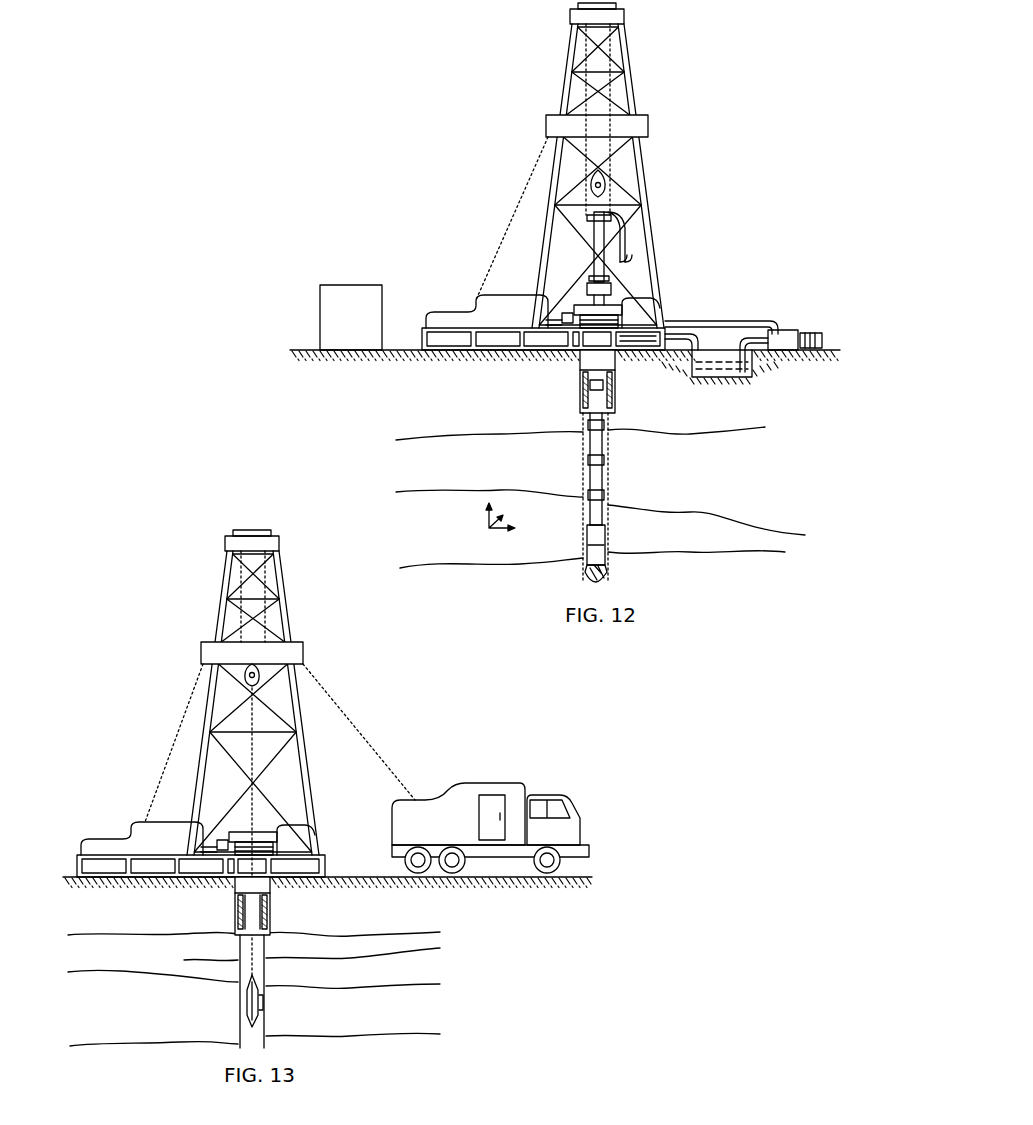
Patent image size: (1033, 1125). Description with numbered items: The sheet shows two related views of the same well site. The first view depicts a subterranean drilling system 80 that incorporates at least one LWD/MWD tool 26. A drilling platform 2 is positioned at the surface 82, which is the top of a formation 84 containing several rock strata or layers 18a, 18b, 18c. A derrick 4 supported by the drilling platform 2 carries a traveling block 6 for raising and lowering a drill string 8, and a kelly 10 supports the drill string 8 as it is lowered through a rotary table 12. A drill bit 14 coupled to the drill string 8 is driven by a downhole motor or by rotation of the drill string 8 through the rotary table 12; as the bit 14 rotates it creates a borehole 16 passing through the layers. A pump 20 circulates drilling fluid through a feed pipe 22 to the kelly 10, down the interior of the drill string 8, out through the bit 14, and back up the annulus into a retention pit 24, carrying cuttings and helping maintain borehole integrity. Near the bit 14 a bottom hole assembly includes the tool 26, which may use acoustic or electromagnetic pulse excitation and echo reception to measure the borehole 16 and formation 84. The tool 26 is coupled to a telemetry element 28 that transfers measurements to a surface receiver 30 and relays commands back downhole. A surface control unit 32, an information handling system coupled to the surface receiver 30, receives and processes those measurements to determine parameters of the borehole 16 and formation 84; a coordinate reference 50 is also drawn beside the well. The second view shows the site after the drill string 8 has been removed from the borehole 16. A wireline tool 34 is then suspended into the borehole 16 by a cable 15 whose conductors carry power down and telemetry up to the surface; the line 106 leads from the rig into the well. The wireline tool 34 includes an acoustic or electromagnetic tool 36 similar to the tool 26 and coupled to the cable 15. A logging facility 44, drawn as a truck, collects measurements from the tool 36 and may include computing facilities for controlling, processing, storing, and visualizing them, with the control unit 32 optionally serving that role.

In FIG. 12, the drilling platform 2 is at (420, 340).
In FIG. 13, the drilling platform 2 is at (326, 866).
In FIG. 12, the derrick 4 is at (634, 93).
In FIG. 13, the derrick 4 is at (313, 790).
In FIG. 12, the traveling block 6 is at (606, 180).
In FIG. 13, the traveling block 6 is at (260, 674).
In FIG. 12, the drill string 8 is at (605, 410).
In FIG. 12, the kelly 10 is at (600, 232).
In FIG. 12, the rotary table 12 is at (612, 302).
In FIG. 13, the rotary table 12 is at (262, 832).
In FIG. 12, the drill bit 14 is at (603, 574).
In FIG. 13, the cable 15 is at (246, 916).
In FIG. 12, the borehole 16 is at (598, 432).
In FIG. 13, the borehole 16 is at (258, 952).
In FIG. 12, the rock strata or layer 18a is at (426, 522).
In FIG. 13, the rock strata or layer 18a is at (423, 916).
In FIG. 12, the rock strata or layer 18b is at (430, 472).
In FIG. 13, the rock strata or layer 18b is at (100, 963).
In FIG. 12, the rock strata or layer 18c is at (750, 420).
In FIG. 13, the rock strata or layer 18c is at (100, 1033).
In FIG. 12, the pump 20 is at (782, 330).
In FIG. 12, the feed pipe 22 is at (715, 322).
In FIG. 12, the retention pit 24 is at (728, 375).
In FIG. 12, the LWD/MWD tool 26 is at (592, 548).
In FIG. 12, the telemetry element 28 is at (599, 530).
In FIG. 12, the surface receiver 30 is at (604, 290).
In FIG. 12, the surface control unit 32 is at (363, 327).
In FIG. 13, the wireline tool 34 is at (245, 990).
In FIG. 13, the acoustic and/or electromagnetic tool 36 is at (246, 1000).
In FIG. 13, the logging facility 44 is at (470, 783).
In FIG. 12, the coordinate system 50 is at (480, 521).
In FIG. 12, the subterranean drilling system 80 is at (724, 137).
In FIG. 12, the surface 82 is at (305, 350).
In FIG. 13, the surface 82 is at (77, 877).
In FIG. 12, the formation 84 is at (347, 415).
In FIG. 13, the formation 84 is at (553, 941).
In FIG. 13, the wireline 106 is at (310, 960).